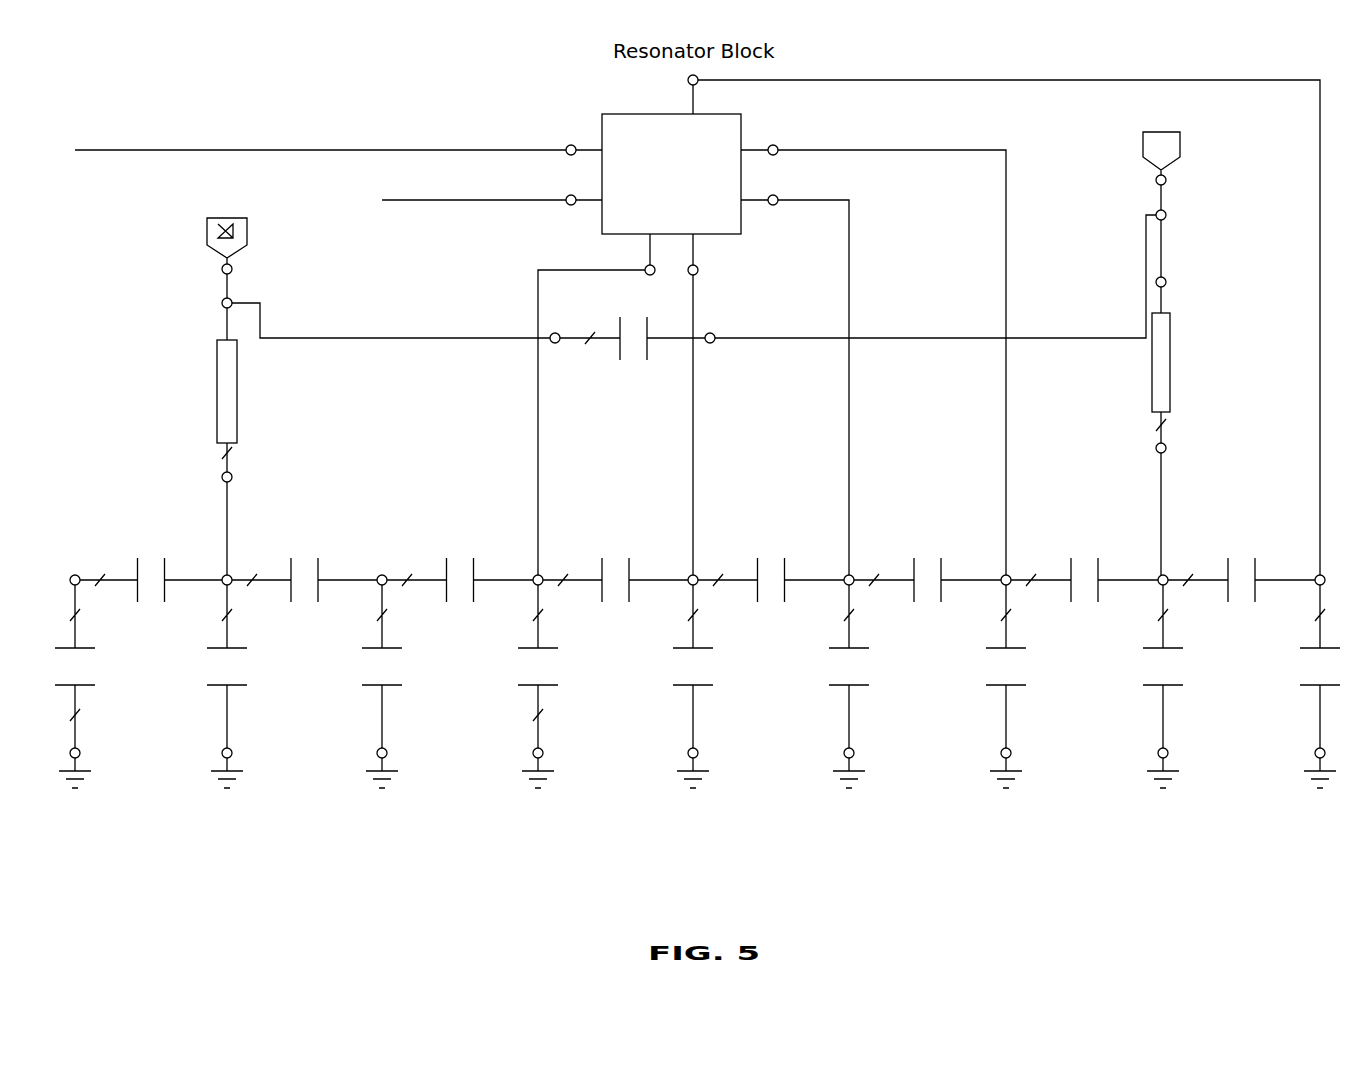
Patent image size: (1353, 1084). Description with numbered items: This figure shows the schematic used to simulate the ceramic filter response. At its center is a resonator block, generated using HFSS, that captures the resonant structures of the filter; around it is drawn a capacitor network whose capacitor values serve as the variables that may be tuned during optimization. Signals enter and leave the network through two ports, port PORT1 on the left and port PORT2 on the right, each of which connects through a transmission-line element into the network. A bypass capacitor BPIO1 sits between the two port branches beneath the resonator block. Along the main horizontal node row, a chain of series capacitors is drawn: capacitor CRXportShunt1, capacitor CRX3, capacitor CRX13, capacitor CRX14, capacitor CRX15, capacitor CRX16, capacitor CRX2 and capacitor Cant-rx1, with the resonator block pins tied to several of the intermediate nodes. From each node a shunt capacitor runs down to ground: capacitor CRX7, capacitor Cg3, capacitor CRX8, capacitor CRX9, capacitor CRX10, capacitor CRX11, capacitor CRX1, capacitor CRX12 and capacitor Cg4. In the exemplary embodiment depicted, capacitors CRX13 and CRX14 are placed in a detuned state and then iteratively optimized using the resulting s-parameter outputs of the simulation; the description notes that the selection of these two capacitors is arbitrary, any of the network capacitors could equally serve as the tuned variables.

The port 1 with transmission line PORT1 is at (337, 399).
The port 2 with transmission line PORT2 is at (986, 355).
The capacitor BPIO1 is at (632, 367).
The capacitor CRXportShunt1 is at (151, 540).
The capacitor CRX3 is at (304, 551).
The capacitor CRX13 is at (460, 551).
The capacitor CRX14 is at (615, 551).
The capacitor CRX15 is at (771, 551).
The capacitor CRX16 is at (927, 551).
The capacitor CRX2 is at (1084, 550).
The capacitor Cant-rx1 is at (1241, 550).
The shunt capacitor CRX7 is at (96, 721).
The shunt capacitor Cg3 is at (235, 721).
The shunt capacitor CRX8 is at (404, 721).
The shunt capacitor CRX9 is at (556, 721).
The shunt capacitor CRX10 is at (719, 721).
The shunt capacitor CRX11 is at (869, 721).
The shunt capacitor CRX1 is at (1017, 721).
The shunt capacitor CRX12 is at (1176, 721).
The shunt capacitor Cg4 is at (1315, 721).